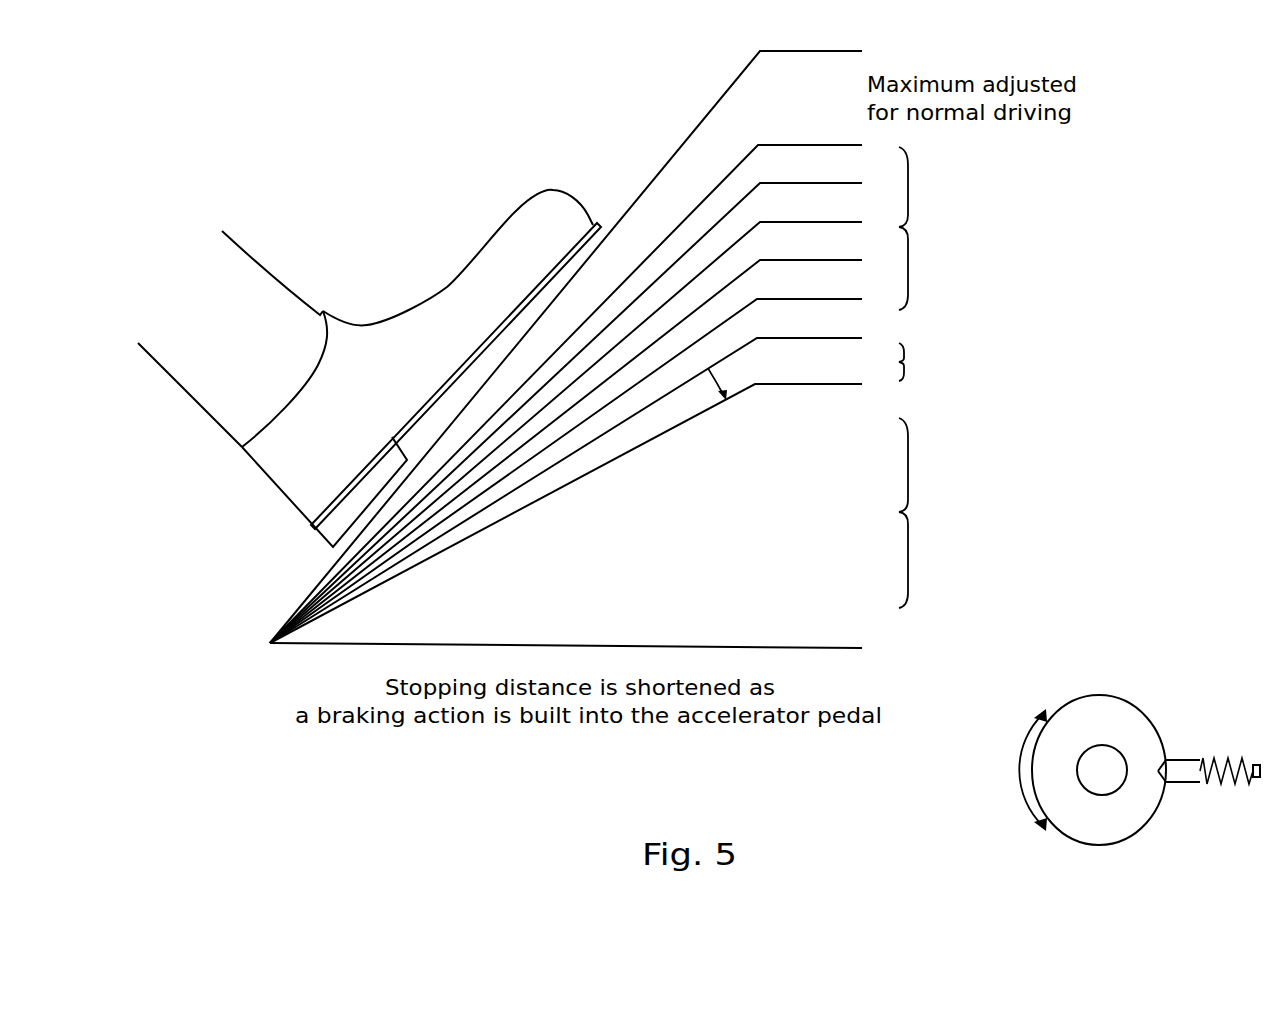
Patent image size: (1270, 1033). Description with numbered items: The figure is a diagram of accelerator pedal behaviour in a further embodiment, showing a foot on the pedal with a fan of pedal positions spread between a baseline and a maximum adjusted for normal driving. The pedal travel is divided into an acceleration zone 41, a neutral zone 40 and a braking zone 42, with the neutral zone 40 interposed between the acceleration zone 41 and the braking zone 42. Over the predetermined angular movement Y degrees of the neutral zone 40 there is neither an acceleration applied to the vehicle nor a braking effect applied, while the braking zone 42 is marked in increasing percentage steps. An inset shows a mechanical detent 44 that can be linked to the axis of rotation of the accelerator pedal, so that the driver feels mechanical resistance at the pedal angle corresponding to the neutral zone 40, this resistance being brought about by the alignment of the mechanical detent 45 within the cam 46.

The neutral zone 40 is at (658, 478).
The acceleration zone 41 is at (999, 513).
The braking zone 42 is at (657, 381).
The mechanical detent 44 is at (1040, 673).
The mechanical detent 45 is at (1190, 775).
The cam 46 is at (1148, 730).